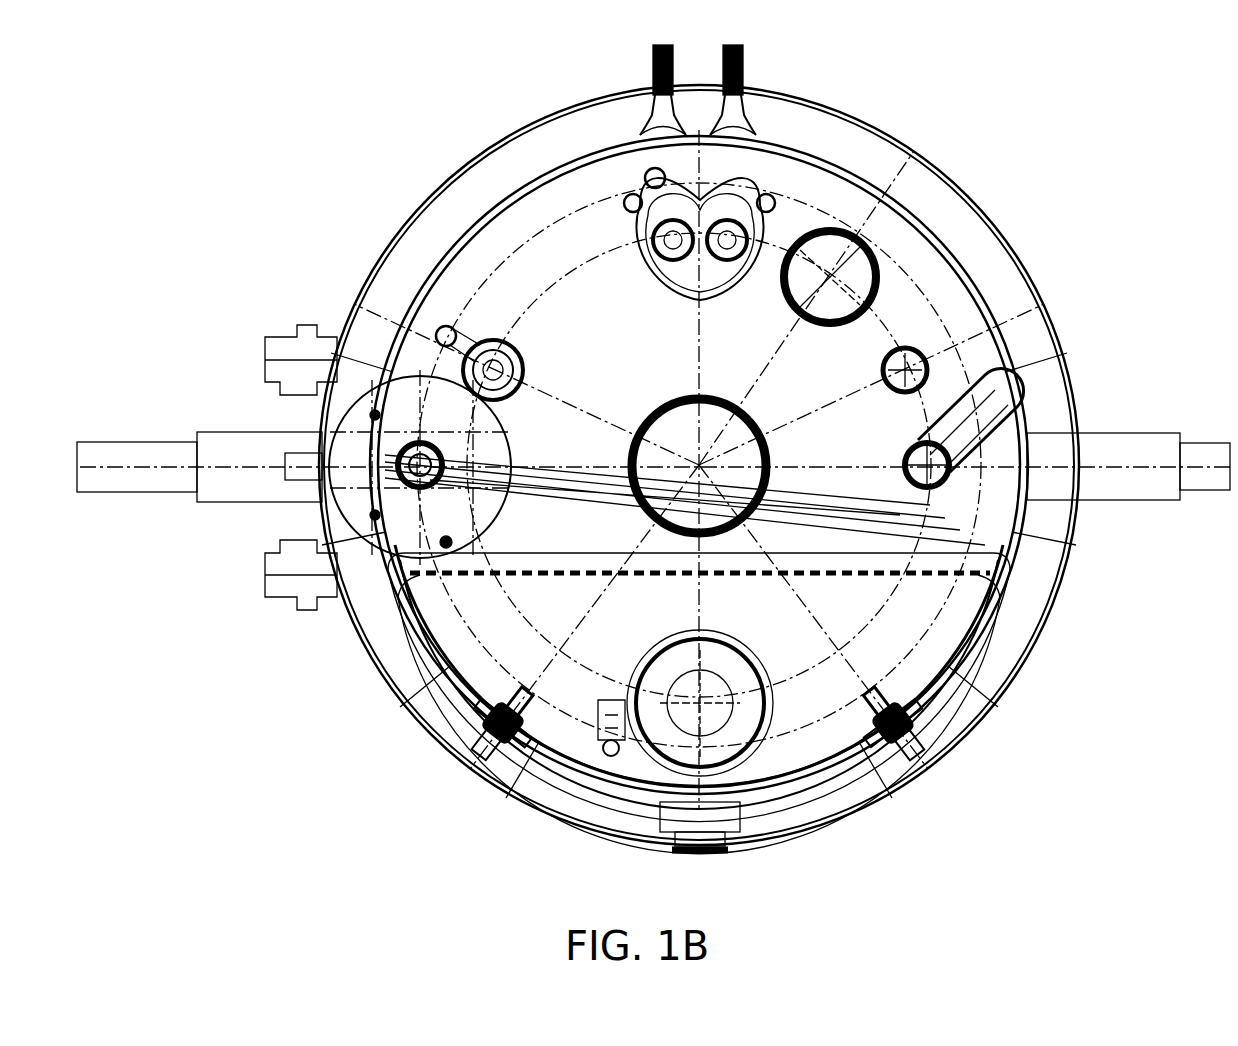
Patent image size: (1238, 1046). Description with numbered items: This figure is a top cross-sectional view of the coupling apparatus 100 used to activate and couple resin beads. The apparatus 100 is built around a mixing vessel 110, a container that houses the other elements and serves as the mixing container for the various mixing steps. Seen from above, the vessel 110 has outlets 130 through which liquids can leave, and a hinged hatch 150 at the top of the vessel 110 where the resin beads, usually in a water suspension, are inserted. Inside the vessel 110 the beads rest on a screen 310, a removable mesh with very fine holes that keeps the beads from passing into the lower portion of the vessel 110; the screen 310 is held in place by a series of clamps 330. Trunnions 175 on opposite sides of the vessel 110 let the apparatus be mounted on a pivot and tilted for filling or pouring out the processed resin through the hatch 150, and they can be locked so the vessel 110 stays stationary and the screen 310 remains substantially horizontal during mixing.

The coupling apparatus 100 is at (1150, 731).
The mixing vessel 110 is at (1005, 228).
The outlets 130 is at (705, 858).
The hinged hatch 150 is at (813, 748).
The trunnions 175 is at (237, 487).
The screen 310 is at (540, 170).
The clamps 330 is at (500, 752).